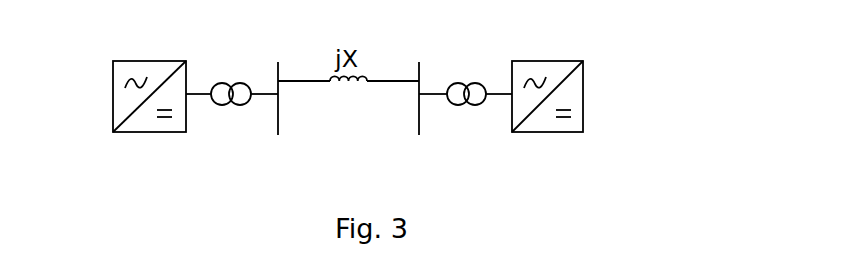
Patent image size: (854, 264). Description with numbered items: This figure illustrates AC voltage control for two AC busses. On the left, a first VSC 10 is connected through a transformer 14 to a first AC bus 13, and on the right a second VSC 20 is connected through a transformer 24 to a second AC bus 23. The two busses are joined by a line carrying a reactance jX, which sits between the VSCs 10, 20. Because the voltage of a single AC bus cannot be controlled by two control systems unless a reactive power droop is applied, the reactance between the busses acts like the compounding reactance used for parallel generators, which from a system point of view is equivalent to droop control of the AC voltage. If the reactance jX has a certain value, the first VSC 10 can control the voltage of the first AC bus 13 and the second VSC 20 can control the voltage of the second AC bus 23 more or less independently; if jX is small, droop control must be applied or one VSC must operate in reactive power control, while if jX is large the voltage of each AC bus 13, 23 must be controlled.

The first VSC 10 is at (113, 117).
The transformer 14 is at (221, 82).
The first AC bus 13 is at (279, 117).
The second AC bus 23 is at (418, 118).
The transformer 24 is at (457, 82).
The second VSC 20 is at (578, 117).